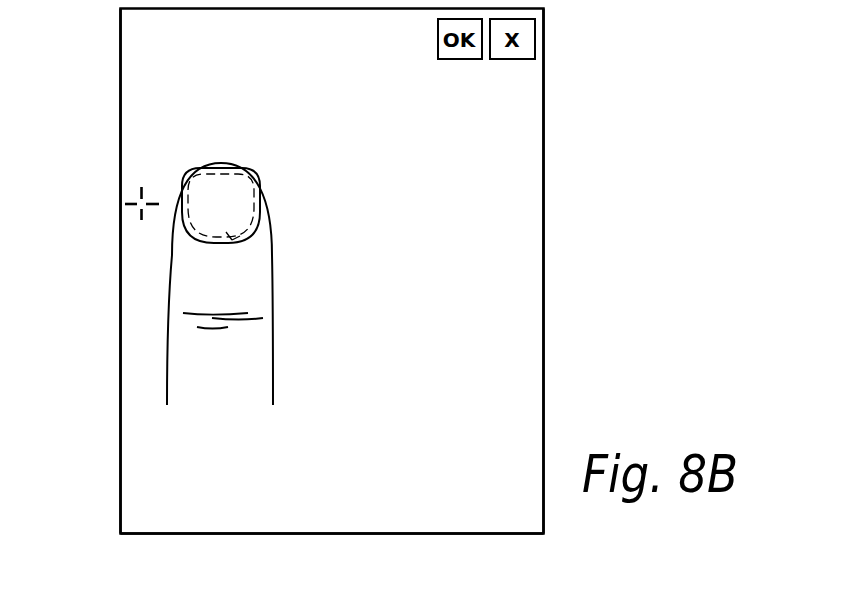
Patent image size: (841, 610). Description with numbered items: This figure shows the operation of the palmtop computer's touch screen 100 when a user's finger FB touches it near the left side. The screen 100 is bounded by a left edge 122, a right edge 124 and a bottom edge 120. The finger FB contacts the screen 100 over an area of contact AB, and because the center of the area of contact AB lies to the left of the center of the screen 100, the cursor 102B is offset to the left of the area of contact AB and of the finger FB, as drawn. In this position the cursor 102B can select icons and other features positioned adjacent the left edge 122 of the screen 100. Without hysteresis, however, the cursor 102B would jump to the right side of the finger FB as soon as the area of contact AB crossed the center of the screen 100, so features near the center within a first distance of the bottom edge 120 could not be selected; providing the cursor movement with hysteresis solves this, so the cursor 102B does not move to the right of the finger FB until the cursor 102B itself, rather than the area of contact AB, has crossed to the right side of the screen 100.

The screen 100 is at (493, 120).
The bottom edge 120 is at (302, 535).
The left edge 122 is at (120, 330).
The right edge 124 is at (545, 247).
The cursor 102B is at (146, 199).
The finger FB is at (265, 188).
The area of contact AB is at (248, 247).